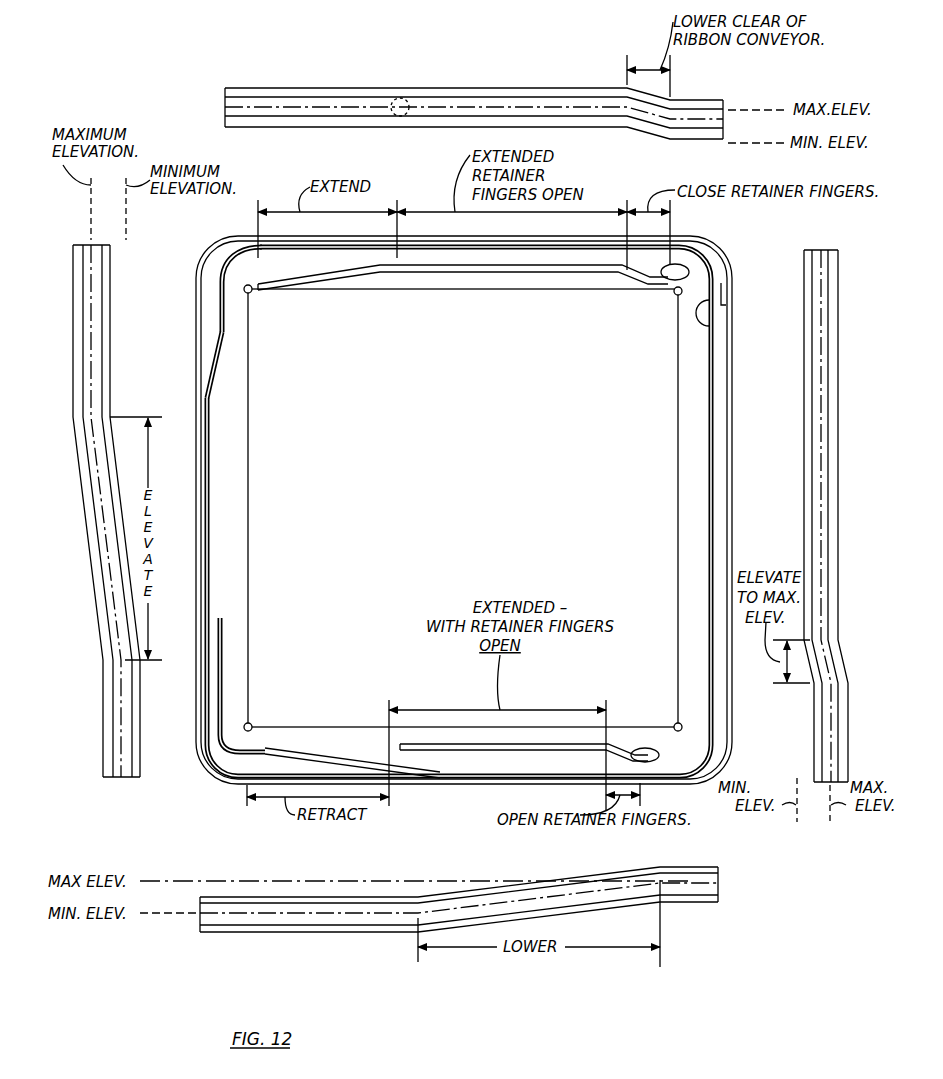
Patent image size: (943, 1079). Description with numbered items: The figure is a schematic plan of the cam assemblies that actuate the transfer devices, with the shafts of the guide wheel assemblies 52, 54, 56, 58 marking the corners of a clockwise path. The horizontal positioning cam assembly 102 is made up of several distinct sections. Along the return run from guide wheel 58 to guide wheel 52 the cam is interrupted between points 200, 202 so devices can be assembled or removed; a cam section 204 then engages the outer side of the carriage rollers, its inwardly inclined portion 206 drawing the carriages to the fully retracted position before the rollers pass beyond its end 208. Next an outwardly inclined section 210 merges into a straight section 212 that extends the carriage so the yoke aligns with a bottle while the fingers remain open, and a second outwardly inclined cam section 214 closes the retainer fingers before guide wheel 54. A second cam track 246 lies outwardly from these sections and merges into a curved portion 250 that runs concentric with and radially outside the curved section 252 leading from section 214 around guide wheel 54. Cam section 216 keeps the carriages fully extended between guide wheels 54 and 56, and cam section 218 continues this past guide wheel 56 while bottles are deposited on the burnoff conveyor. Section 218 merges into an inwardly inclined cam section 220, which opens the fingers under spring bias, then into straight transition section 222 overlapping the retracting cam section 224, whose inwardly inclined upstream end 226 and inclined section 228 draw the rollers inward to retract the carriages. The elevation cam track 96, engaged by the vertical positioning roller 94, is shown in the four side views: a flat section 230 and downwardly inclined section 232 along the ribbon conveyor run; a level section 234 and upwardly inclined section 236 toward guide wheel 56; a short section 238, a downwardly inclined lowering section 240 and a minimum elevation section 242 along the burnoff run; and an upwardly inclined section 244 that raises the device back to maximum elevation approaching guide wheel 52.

The cam track 96 is at (462, 508).
The vertical positioning roller 94 is at (402, 98).
The flat section 230 is at (325, 100).
The downwardly inclined section 232 is at (650, 110).
The second cam track 246 is at (600, 245).
The cam section 216 is at (704, 505).
The cam assembly 102 is at (722, 545).
The end of cam section 208 is at (258, 251).
The cam section 204 is at (218, 330).
The inwardly inclined portion 206 is at (216, 356).
The point 202 is at (210, 425).
The point 200 is at (222, 618).
The guide wheel assembly 52 is at (255, 295).
The guide wheel assembly 54 is at (672, 296).
The guide wheel assembly 56 is at (672, 722).
The guide wheel assembly 58 is at (254, 720).
The outwardly inclined section 210 is at (340, 276).
The straight section 212 is at (505, 273).
The second outwardly inclined cam section 214 is at (710, 262).
The curved portion 250 is at (728, 292).
The curved section 252 is at (700, 325).
The straight transition section 222 is at (430, 742).
The inwardly inclined cam section 220 is at (580, 742).
The cam section 218 is at (640, 748).
The retracting cam section 224 is at (302, 748).
The inwardly inclined section 228 is at (360, 766).
The inwardly inclined upstream end 226 is at (428, 778).
The upwardly inclined section 244 is at (107, 562).
The level section 234 is at (822, 373).
The upwardly inclined section 236 is at (825, 660).
The minimum elevation section 242 is at (298, 915).
The downwardly inclined lowering section 240 is at (590, 895).
The short section 238 is at (716, 886).